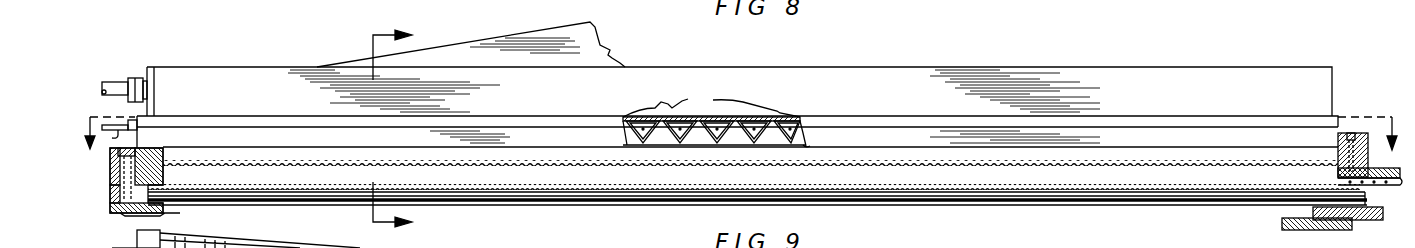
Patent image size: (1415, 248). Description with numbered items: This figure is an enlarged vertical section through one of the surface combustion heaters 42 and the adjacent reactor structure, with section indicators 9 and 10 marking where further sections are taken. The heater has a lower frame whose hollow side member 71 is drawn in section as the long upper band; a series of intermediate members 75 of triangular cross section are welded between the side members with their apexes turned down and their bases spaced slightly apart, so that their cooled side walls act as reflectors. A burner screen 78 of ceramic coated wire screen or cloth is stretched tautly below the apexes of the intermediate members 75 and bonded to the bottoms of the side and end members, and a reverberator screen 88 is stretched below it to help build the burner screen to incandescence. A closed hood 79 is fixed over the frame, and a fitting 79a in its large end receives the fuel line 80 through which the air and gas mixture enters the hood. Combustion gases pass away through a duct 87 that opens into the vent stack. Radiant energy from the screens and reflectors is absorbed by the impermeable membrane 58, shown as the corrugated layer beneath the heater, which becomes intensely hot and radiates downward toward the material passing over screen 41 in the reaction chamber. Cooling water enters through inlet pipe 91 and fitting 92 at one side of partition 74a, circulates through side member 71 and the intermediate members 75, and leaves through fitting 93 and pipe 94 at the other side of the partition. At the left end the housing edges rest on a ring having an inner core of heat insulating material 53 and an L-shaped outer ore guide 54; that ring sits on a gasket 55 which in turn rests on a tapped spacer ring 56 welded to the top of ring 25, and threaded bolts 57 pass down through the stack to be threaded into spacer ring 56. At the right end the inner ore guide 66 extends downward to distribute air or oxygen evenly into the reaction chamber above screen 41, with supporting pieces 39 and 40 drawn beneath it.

In FIG. 8, the section line 9- 9 is at (739, 122).
In FIG. 8, the section line 10- 10 is at (378, 129).
In FIG. 8, the ring 25 is at (112, 213).
In FIG. 8, the support block 39 is at (1362, 221).
In FIG. 8, the bottom panel layer 40 is at (499, 197).
In FIG. 8, the screen 41 is at (546, 185).
In FIG. 8, the heater 42 is at (918, 56).
In FIG. 8, the inner core of heat insulating material 53 is at (164, 171).
In FIG. 8, the L-shaped outer ore guide 54 is at (192, 186).
In FIG. 8, the gasket 55 is at (113, 186).
In FIG. 8, the tapped spacer ring 56 is at (112, 198).
In FIG. 8, the threaded bolts 57 is at (128, 150).
In FIG. 8, the impermeable membrane 58 is at (645, 168).
In FIG. 8, the inner ore guide 66 is at (1385, 186).
In FIG. 8, the hollow side member 71 is at (289, 122).
In FIG. 9, the partition 74a is at (165, 236).
In FIG. 8, the intermediate member 75 is at (714, 117).
In FIG. 8, the burner screen 78 is at (627, 133).
In FIG. 8, the closed hood 79 is at (580, 97).
In FIG. 9, the closed hood 79 is at (1293, 231).
In FIG. 8, the fitting 79a is at (133, 78).
In FIG. 8, the fuel line 80 is at (112, 86).
In FIG. 8, the duct 87 is at (524, 38).
In FIG. 8, the reverberator screen 88 is at (808, 145).
In FIG. 8, the inlet pipe 91 is at (107, 138).
In FIG. 8, the fitting 92 is at (138, 124).
In FIG. 9, the fitting 93 is at (112, 247).
In FIG. 9, the pipe 94 is at (104, 243).